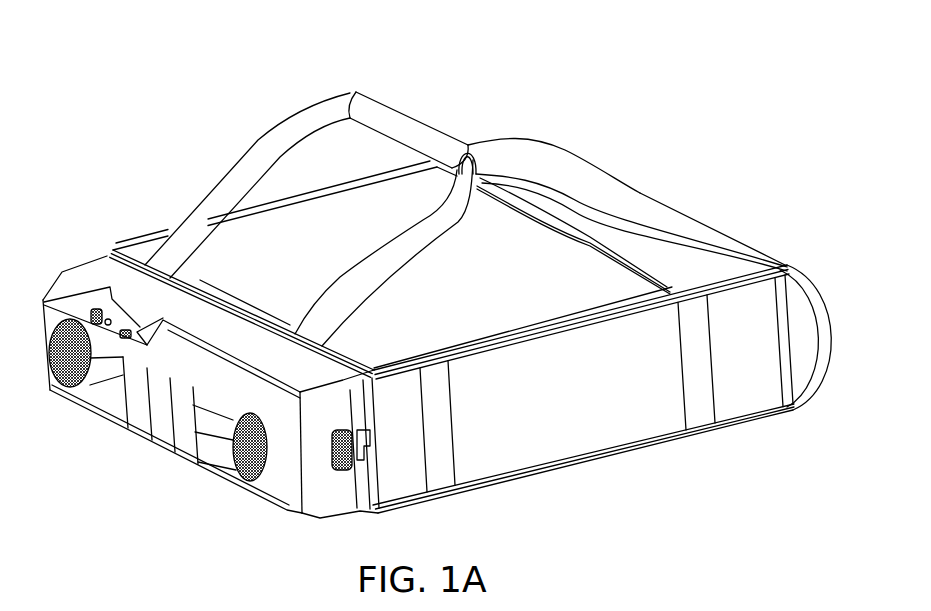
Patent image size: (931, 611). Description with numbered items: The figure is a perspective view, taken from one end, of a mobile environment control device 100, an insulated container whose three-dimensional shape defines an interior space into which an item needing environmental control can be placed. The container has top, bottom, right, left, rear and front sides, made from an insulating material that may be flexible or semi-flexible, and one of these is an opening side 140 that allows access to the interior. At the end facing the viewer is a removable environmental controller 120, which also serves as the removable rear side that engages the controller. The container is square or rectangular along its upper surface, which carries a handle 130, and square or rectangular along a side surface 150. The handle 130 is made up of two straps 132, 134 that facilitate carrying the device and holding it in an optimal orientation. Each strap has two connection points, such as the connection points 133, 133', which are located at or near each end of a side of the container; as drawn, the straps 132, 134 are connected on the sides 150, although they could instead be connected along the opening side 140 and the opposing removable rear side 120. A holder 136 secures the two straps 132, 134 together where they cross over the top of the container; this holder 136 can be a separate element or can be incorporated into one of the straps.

The mobile environment control device 100 is at (623, 80).
The removable environmental controller 120 is at (137, 433).
The handle 130 is at (460, 98).
The strap 132 is at (193, 220).
The connection point 133 is at (521, 251).
The connection point 133' is at (627, 169).
The strap 134 is at (597, 212).
The holder 136 is at (397, 127).
The opening side 140 is at (666, 207).
The side surface 150 is at (613, 430).